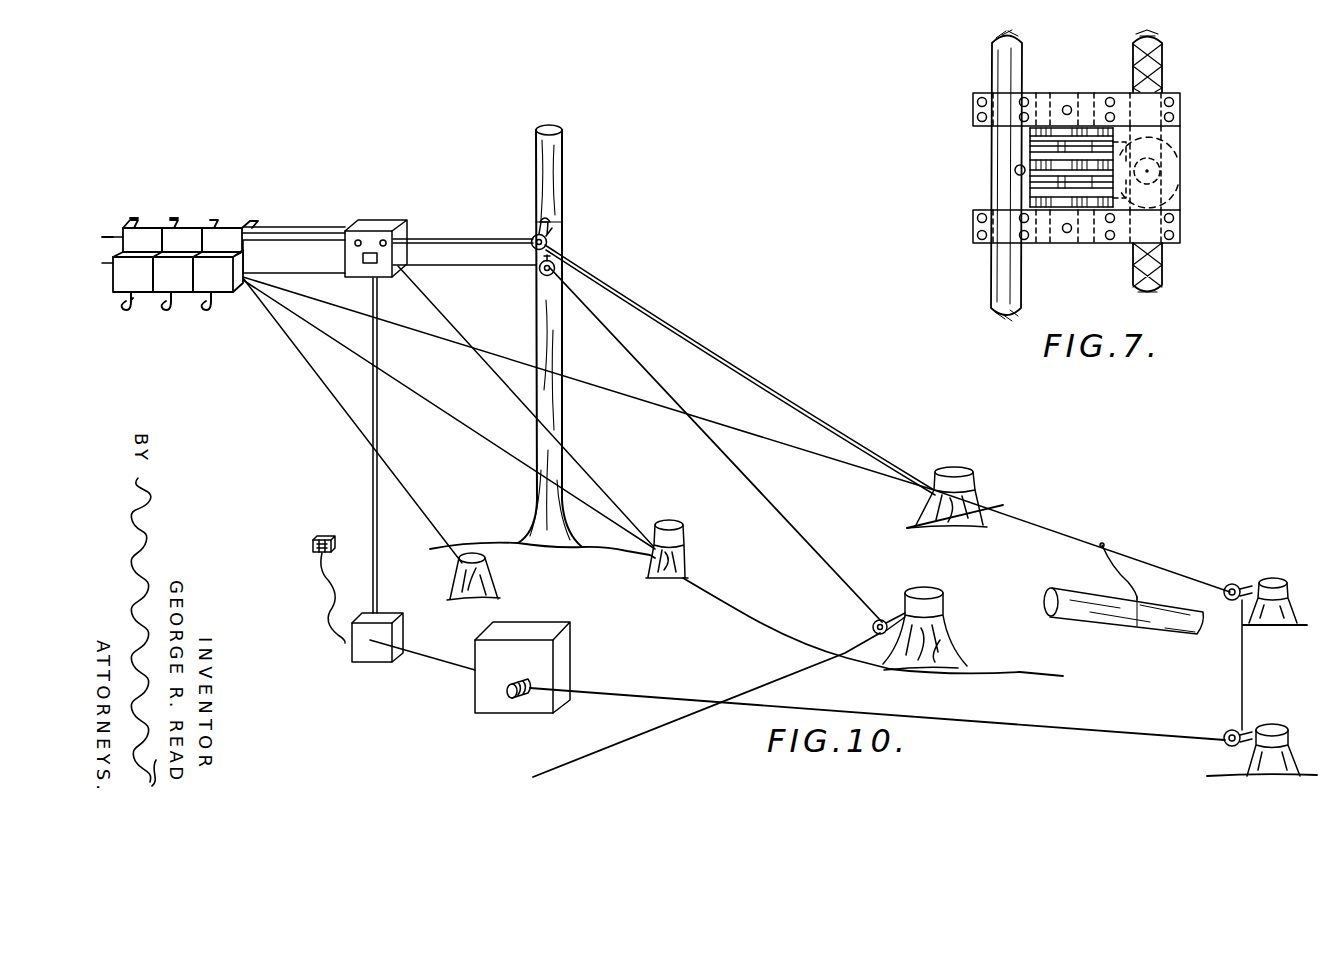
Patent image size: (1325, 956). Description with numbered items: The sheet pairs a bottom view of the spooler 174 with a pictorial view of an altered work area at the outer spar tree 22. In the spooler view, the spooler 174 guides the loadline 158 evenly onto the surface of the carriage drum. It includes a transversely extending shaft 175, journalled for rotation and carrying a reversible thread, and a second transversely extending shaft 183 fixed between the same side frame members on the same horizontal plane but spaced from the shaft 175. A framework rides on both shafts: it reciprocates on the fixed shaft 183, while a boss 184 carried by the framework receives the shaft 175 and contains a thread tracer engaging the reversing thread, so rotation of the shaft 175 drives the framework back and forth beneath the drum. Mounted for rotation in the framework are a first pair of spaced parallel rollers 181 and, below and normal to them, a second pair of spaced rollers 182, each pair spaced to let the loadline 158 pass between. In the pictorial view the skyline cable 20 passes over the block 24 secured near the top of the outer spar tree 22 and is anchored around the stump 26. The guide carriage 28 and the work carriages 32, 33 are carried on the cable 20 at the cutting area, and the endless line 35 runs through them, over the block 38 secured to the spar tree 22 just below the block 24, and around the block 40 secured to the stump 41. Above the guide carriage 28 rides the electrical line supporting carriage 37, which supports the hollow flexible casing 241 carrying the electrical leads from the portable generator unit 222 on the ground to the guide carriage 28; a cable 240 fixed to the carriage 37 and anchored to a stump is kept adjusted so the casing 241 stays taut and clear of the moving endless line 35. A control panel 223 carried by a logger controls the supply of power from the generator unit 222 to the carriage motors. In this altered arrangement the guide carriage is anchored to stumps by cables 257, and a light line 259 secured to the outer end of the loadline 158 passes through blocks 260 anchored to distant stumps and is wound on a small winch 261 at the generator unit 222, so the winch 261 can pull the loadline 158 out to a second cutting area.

In FIG. 10, the skyline cable 20 is at (110, 230).
In FIG. 10, the outer spar tree 22 is at (553, 340).
In FIG. 10, the block 24 is at (548, 238).
In FIG. 10, the stump 26 is at (975, 490).
In FIG. 10, the guide carriage 28 is at (235, 228).
In FIG. 10, the work carriage 32 is at (158, 228).
In FIG. 10, the work carriage 33 is at (195, 228).
In FIG. 10, the endless line 35 is at (278, 236).
In FIG. 10, the electrical line supporting carriage 37 is at (385, 223).
In FIG. 10, the block 38 is at (538, 274).
In FIG. 10, the block 40 is at (870, 624).
In FIG. 10, the stump 41 is at (937, 604).
In FIG. 10, the loadline 158 is at (765, 410).
In FIG. 7, the spooler 174 is at (1172, 218).
In FIG. 7, the shaft 175 is at (1160, 275).
In FIG. 7, the first pair of rollers 181 is at (1088, 125).
In FIG. 7, the second pair of rollers 182 is at (1037, 187).
In FIG. 7, the shaft 183 is at (1000, 275).
In FIG. 7, the boss 184 is at (1170, 195).
In FIG. 10, the portable generator unit 222 is at (385, 617).
In FIG. 10, the control panel 223 is at (330, 537).
In FIG. 10, the cable 240 is at (592, 472).
In FIG. 10, the hollow flexible casing 241 is at (295, 227).
In FIG. 10, the cables 257 is at (493, 439).
In FIG. 10, the light line 259 is at (1130, 553).
In FIG. 10, the blocks 260 is at (1238, 580).
In FIG. 10, the winch 261 is at (533, 628).